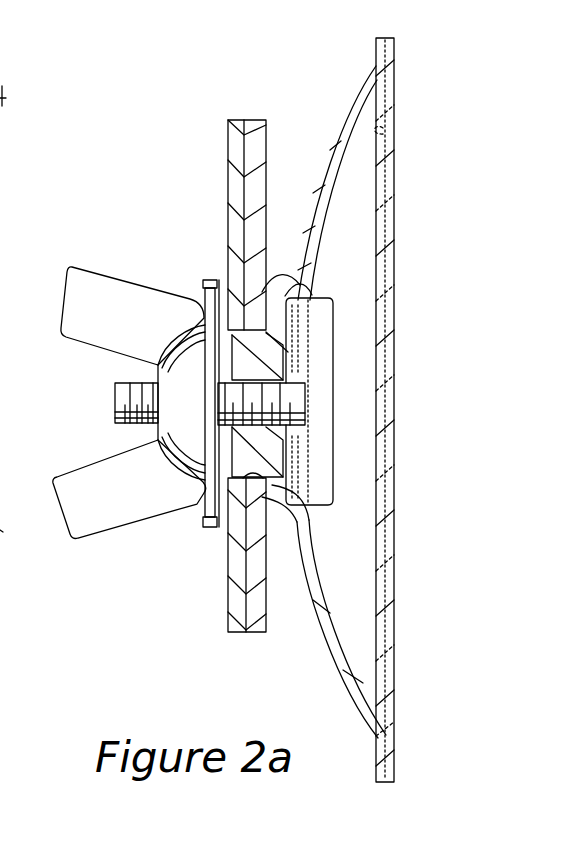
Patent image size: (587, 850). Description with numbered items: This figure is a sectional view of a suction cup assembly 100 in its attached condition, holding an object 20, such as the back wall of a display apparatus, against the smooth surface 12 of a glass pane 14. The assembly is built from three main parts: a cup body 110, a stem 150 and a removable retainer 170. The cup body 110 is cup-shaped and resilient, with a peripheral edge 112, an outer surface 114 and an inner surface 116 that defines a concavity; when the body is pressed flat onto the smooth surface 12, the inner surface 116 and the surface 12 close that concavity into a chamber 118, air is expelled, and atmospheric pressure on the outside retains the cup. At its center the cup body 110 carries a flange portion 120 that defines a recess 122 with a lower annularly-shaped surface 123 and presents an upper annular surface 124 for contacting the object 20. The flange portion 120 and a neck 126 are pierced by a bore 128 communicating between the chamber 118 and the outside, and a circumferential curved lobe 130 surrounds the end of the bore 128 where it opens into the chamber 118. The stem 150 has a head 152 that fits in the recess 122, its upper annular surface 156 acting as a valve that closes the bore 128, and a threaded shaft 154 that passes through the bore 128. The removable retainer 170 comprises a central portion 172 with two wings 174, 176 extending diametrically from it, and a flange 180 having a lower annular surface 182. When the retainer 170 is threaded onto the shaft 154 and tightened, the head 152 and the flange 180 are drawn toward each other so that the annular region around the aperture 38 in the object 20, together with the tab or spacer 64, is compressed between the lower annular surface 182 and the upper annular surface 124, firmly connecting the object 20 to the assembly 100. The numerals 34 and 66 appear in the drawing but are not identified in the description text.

The suction cup assembly 100 is at (170, 125).
The smooth surface 12 is at (385, 130).
The glass pane 14 is at (391, 97).
The object 20 is at (258, 192).
The shroud lower portion 34 is at (268, 602).
The aperture 38 is at (242, 590).
The tab or spacer 64 is at (232, 167).
The upper bracket 66 is at (220, 535).
The cup body 110 is at (358, 78).
The peripheral edge 112 is at (376, 68).
The outer surface 114 is at (334, 130).
The inner surface 116 is at (342, 156).
The chamber 118 is at (362, 223).
The flange portion 120 is at (330, 256).
The recess 122 is at (318, 280).
The lower annularly-shaped surface 123 is at (305, 479).
The upper annular surface 124 is at (386, 208).
The neck 126 is at (236, 565).
The bore 128 is at (300, 403).
The circumferential curved lobe 130 is at (320, 368).
The stem 150 is at (347, 339).
The head 152 is at (325, 356).
The shaft 154 is at (320, 378).
The upper annular surface 156 is at (348, 300).
The removable retainer 170 is at (100, 358).
The central portion 172 is at (198, 410).
The wing 174 is at (134, 505).
The wing 176 is at (122, 320).
The flange 180 is at (205, 520).
The lower annular surface 182 is at (218, 282).